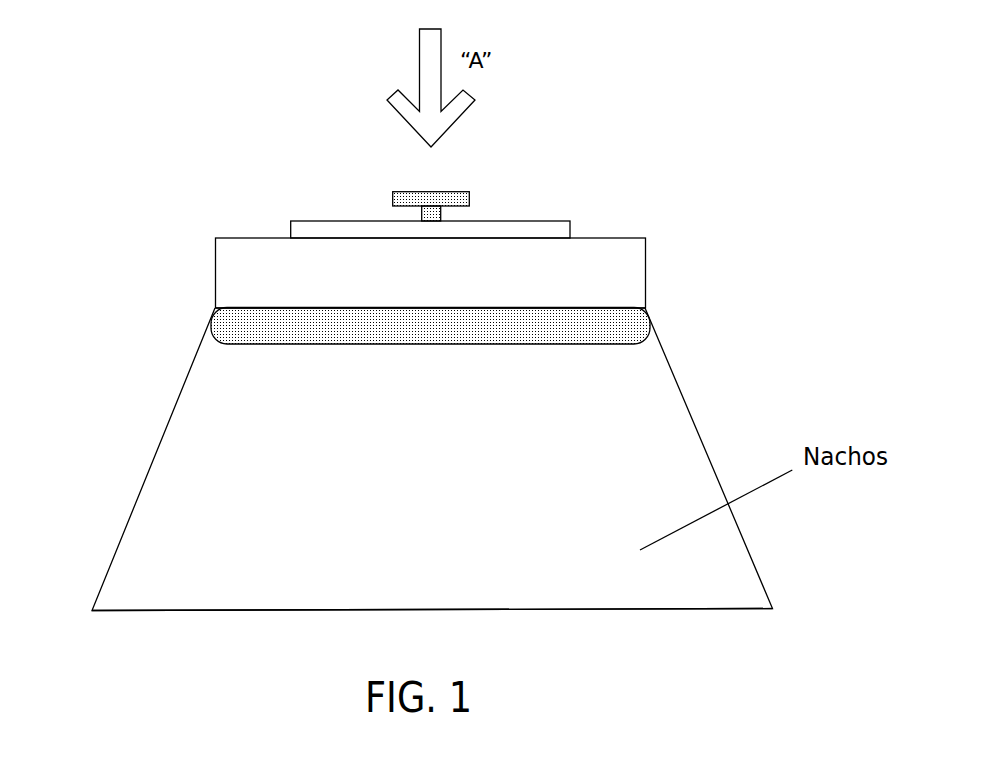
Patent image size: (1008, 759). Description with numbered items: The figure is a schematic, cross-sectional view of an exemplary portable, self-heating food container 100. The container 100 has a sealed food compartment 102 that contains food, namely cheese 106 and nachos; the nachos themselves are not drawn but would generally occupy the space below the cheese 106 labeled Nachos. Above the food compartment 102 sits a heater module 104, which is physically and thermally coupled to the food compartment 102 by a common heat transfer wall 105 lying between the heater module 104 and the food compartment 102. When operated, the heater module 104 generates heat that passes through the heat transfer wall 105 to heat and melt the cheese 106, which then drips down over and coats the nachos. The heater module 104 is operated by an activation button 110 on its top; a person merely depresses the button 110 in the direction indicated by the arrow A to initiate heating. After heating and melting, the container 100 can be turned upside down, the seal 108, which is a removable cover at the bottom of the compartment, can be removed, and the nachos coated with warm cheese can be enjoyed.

The portable, self-heating food container 100 is at (131, 228).
The sealed food compartment 102 is at (200, 493).
The heater module 104 is at (607, 225).
The heat transfer wall 105 is at (302, 308).
The cheese 106 is at (595, 319).
The seal 108 is at (605, 609).
The activation button 110 is at (375, 192).